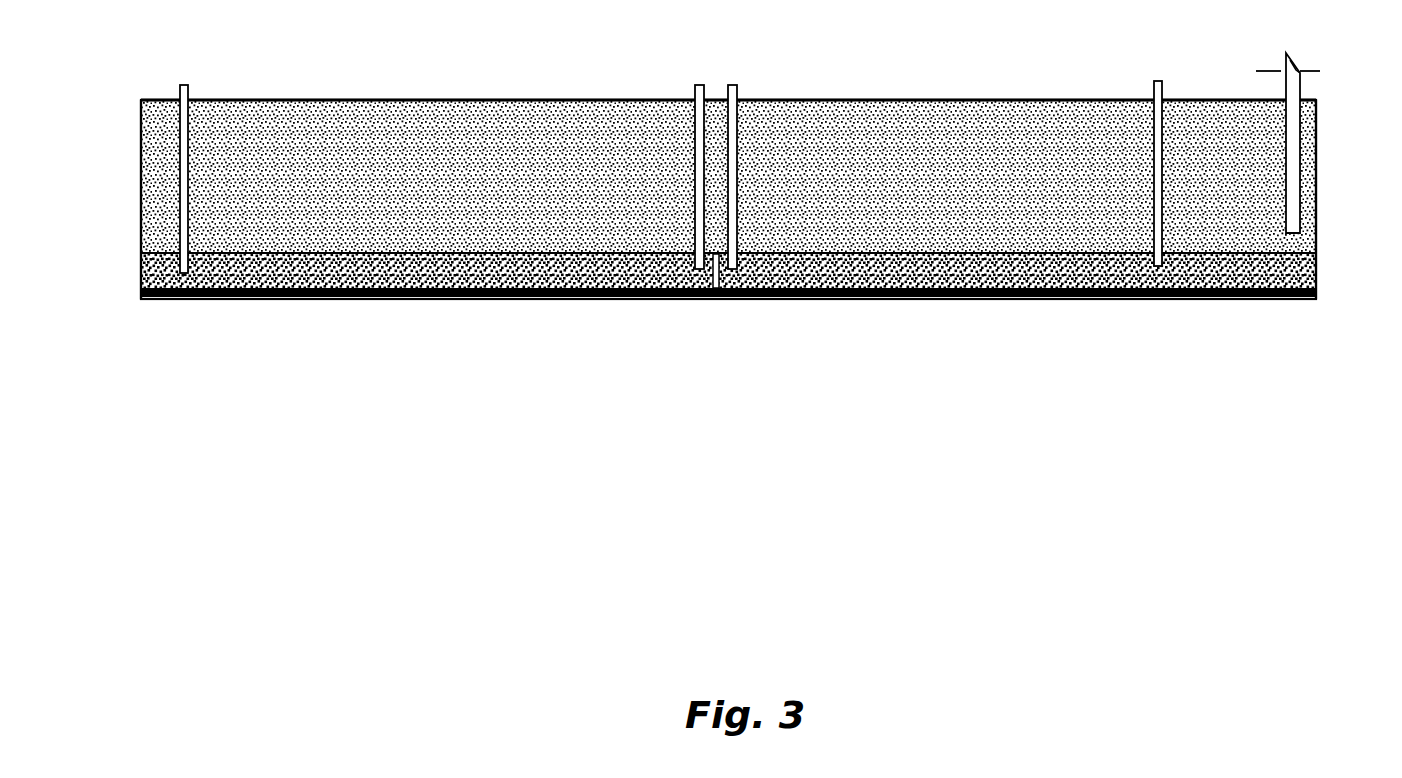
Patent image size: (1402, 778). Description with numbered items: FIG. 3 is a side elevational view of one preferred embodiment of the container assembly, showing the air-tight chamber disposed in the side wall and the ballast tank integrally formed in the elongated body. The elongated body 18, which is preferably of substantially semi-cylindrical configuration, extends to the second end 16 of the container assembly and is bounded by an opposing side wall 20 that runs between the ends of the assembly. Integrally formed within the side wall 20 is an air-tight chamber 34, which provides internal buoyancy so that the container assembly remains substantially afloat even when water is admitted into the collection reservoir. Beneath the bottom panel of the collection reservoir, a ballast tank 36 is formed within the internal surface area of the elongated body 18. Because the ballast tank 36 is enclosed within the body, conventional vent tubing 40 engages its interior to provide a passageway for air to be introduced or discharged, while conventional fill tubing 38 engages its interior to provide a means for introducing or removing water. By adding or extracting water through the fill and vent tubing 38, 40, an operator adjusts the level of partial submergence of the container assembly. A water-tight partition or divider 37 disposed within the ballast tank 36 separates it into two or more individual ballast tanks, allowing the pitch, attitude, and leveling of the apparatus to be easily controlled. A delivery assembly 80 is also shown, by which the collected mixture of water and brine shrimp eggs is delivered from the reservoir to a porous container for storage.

The second end 16 is at (133, 223).
The elongated body 18 is at (1308, 227).
The side wall 20 is at (340, 168).
The air-tight chamber 34 is at (922, 103).
The ballast tank 36 is at (895, 263).
The divider 37 is at (702, 291).
The fill tubing 38 is at (687, 83).
The vent tubing 40 is at (177, 77).
The delivery assembly 80 is at (1262, 77).